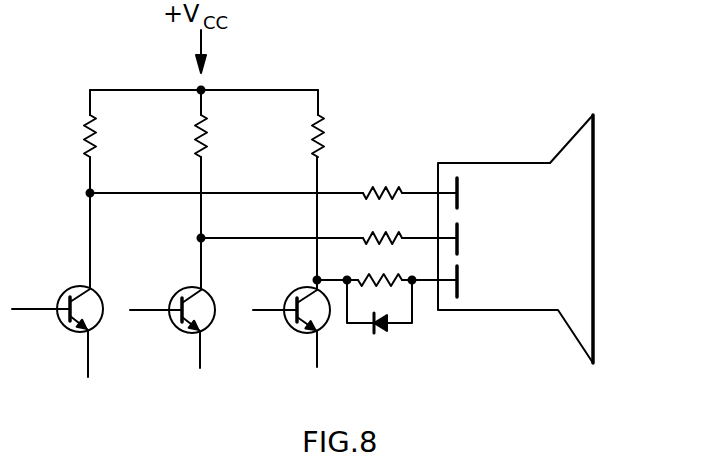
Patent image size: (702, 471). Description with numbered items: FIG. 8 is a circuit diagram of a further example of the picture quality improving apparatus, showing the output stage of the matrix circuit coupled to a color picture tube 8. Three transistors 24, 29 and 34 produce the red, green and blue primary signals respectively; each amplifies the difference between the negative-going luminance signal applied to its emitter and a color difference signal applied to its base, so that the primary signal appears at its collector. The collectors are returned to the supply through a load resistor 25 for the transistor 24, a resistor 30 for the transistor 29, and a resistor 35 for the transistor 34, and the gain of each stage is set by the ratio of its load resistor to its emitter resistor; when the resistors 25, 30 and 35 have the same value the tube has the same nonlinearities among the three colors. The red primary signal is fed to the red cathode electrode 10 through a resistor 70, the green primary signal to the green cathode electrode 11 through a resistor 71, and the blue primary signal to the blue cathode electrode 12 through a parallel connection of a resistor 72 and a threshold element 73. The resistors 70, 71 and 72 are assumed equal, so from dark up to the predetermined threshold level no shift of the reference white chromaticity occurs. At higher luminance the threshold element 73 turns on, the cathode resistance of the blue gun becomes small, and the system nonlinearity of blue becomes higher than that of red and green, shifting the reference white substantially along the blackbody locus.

The color picture tube 8 is at (521, 163).
The cathode electrode 10 is at (460, 198).
The cathode electrode 11 is at (460, 243).
The cathode electrode 12 is at (460, 288).
The transistor 24 is at (101, 316).
The load resistor 25 is at (97, 145).
The transistor 29 is at (203, 325).
The resistor 30 is at (207, 145).
The transistor 34 is at (302, 328).
The resistor 35 is at (322, 145).
The resistor 70 is at (391, 186).
The resistor 71 is at (375, 240).
The resistor 72 is at (377, 283).
The threshold element 73 is at (381, 336).